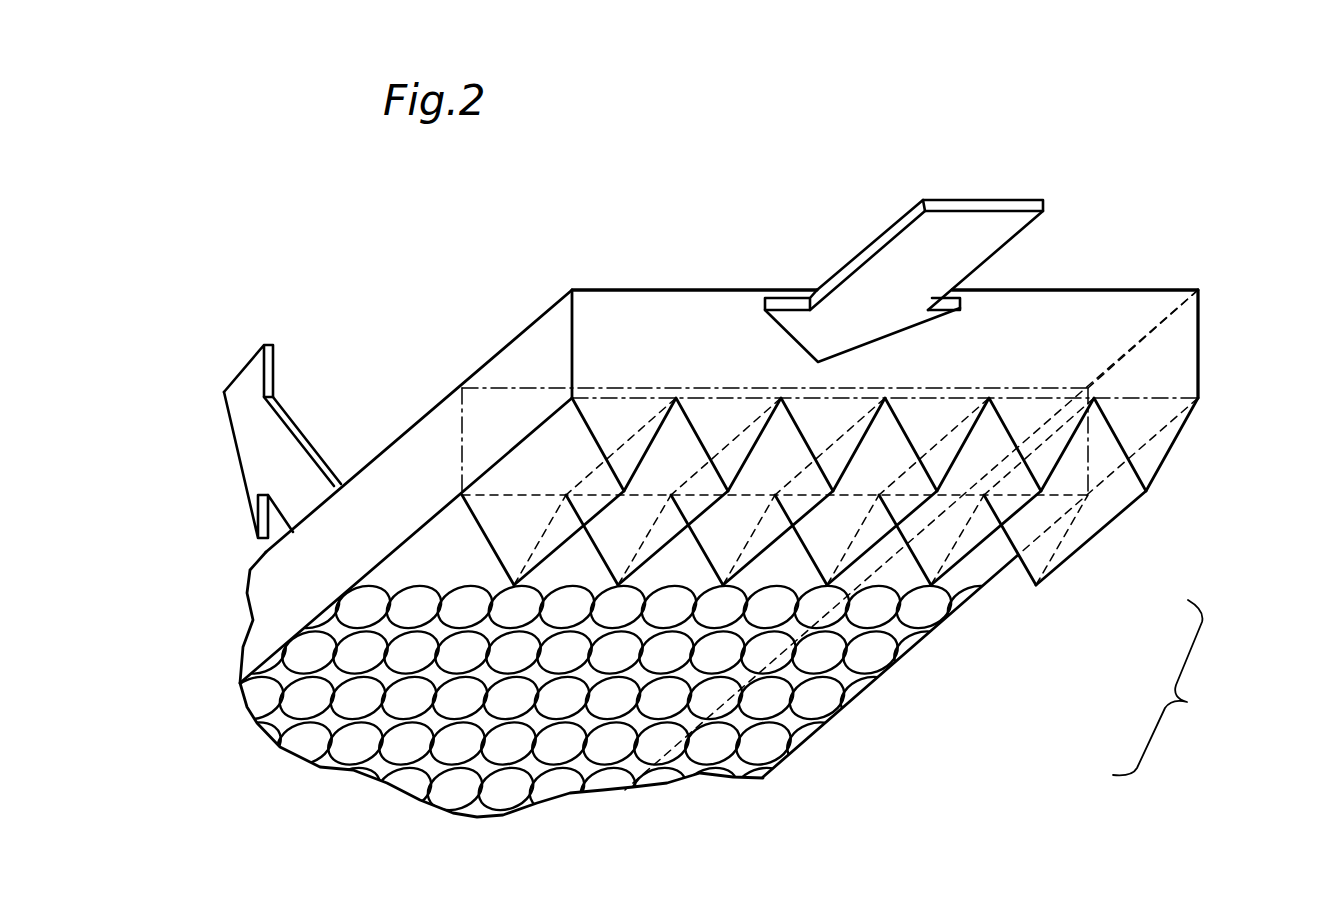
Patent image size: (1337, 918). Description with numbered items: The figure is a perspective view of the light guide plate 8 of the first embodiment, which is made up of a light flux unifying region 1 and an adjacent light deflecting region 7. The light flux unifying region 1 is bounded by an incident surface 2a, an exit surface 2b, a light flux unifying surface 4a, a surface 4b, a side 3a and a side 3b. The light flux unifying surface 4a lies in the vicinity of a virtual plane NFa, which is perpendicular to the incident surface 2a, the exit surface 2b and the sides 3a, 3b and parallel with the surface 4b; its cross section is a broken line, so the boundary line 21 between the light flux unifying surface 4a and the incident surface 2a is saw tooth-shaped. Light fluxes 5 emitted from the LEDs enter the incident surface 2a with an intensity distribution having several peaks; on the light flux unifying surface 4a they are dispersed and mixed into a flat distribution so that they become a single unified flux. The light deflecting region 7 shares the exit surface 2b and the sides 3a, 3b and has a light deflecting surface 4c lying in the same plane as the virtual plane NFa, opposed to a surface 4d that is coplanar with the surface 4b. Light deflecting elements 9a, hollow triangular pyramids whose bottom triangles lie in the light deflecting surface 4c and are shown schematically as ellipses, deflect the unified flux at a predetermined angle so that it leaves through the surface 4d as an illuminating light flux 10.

The light flux unifying region 1 is at (1093, 575).
The incident surface 2a is at (1083, 313).
The exit surface 2b is at (553, 437).
The boundary line 21 is at (592, 433).
The side 3a is at (397, 457).
The side 3b is at (1207, 323).
The light flux unifying surface 4a is at (1090, 522).
The surface 4b is at (713, 320).
The light deflecting surface 4c is at (445, 553).
The surface 4d is at (348, 475).
The light fluxes 5 is at (898, 247).
The light deflecting region 7 is at (1027, 710).
The light guide plate 8 is at (1217, 725).
The light deflecting element 9a is at (877, 660).
The illuminating light flux 10 is at (242, 389).
The virtual plane NFa is at (553, 447).